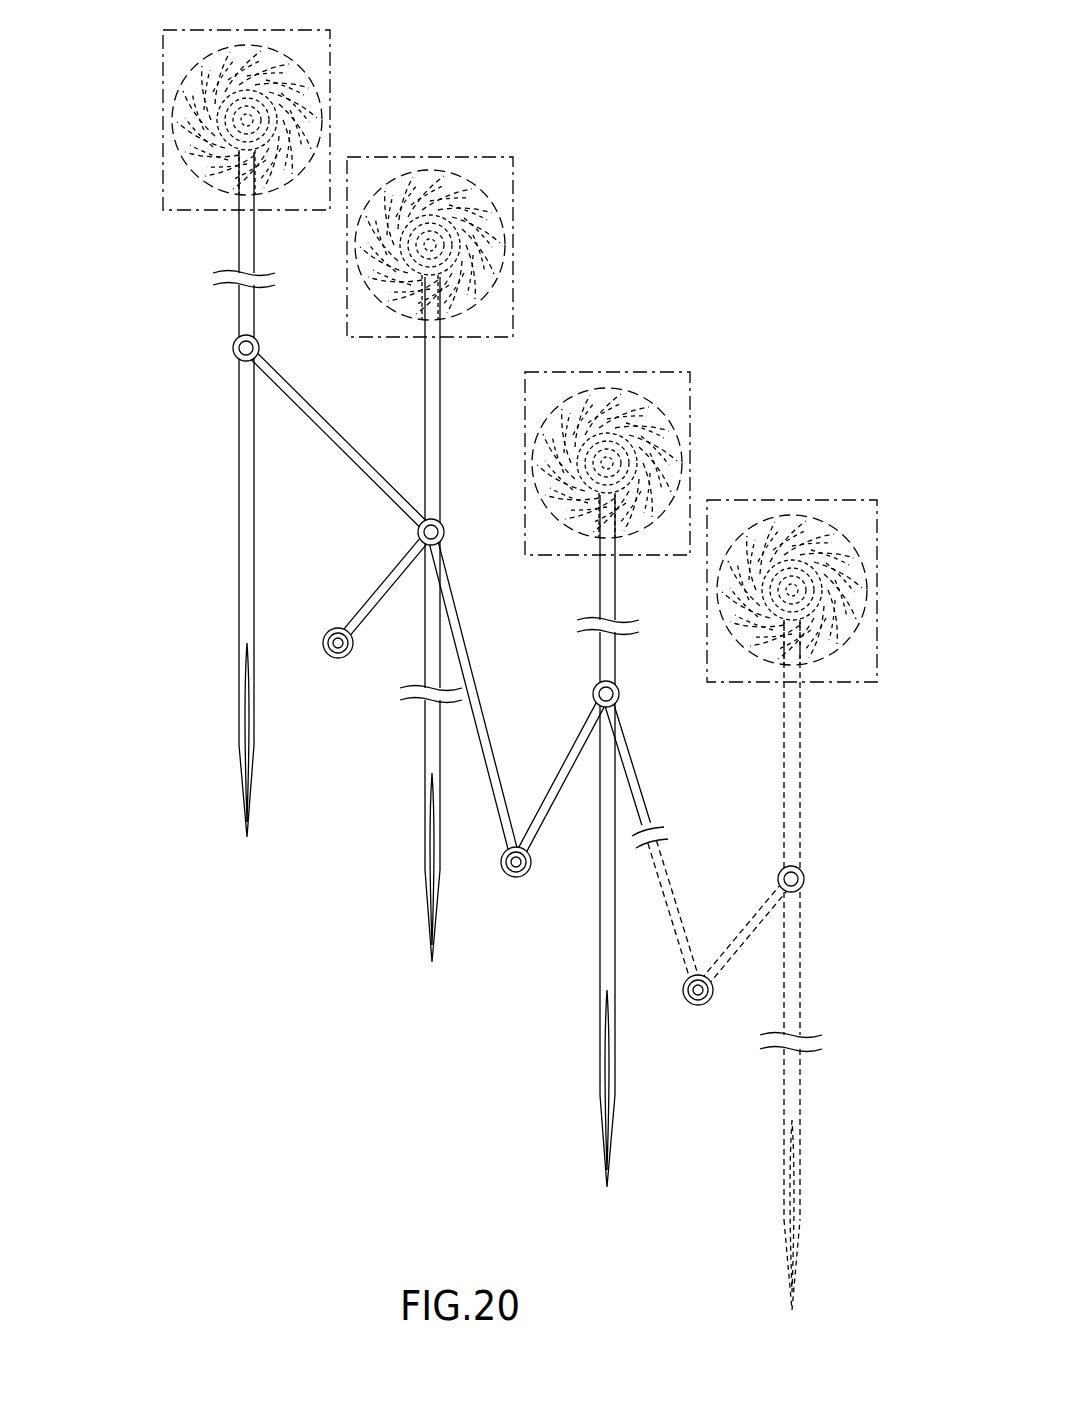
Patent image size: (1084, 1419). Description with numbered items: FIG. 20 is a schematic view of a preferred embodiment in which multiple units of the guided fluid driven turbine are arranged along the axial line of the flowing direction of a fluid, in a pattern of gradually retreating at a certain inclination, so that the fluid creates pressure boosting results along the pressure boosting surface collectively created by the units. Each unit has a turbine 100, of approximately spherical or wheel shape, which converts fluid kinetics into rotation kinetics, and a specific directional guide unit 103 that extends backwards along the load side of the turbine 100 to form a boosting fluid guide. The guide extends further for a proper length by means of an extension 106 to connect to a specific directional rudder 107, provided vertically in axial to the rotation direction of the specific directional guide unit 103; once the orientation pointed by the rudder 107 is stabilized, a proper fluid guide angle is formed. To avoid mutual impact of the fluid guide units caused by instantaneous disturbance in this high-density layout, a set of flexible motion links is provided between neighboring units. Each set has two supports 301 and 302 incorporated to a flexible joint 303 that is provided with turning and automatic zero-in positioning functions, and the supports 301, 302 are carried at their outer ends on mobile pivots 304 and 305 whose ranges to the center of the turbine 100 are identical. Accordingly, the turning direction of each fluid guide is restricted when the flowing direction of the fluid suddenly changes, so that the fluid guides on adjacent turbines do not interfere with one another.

The turbine 100 is at (163, 117).
The specific directional guide unit 103 is at (163, 170).
The extension 106 is at (239, 527).
The specific directional rudder 107 is at (240, 730).
The support 301 is at (290, 473).
The support 302 is at (388, 578).
The flexible joint 303 is at (338, 660).
The mobile pivot 304 is at (233, 348).
The mobile pivot 305 is at (418, 523).